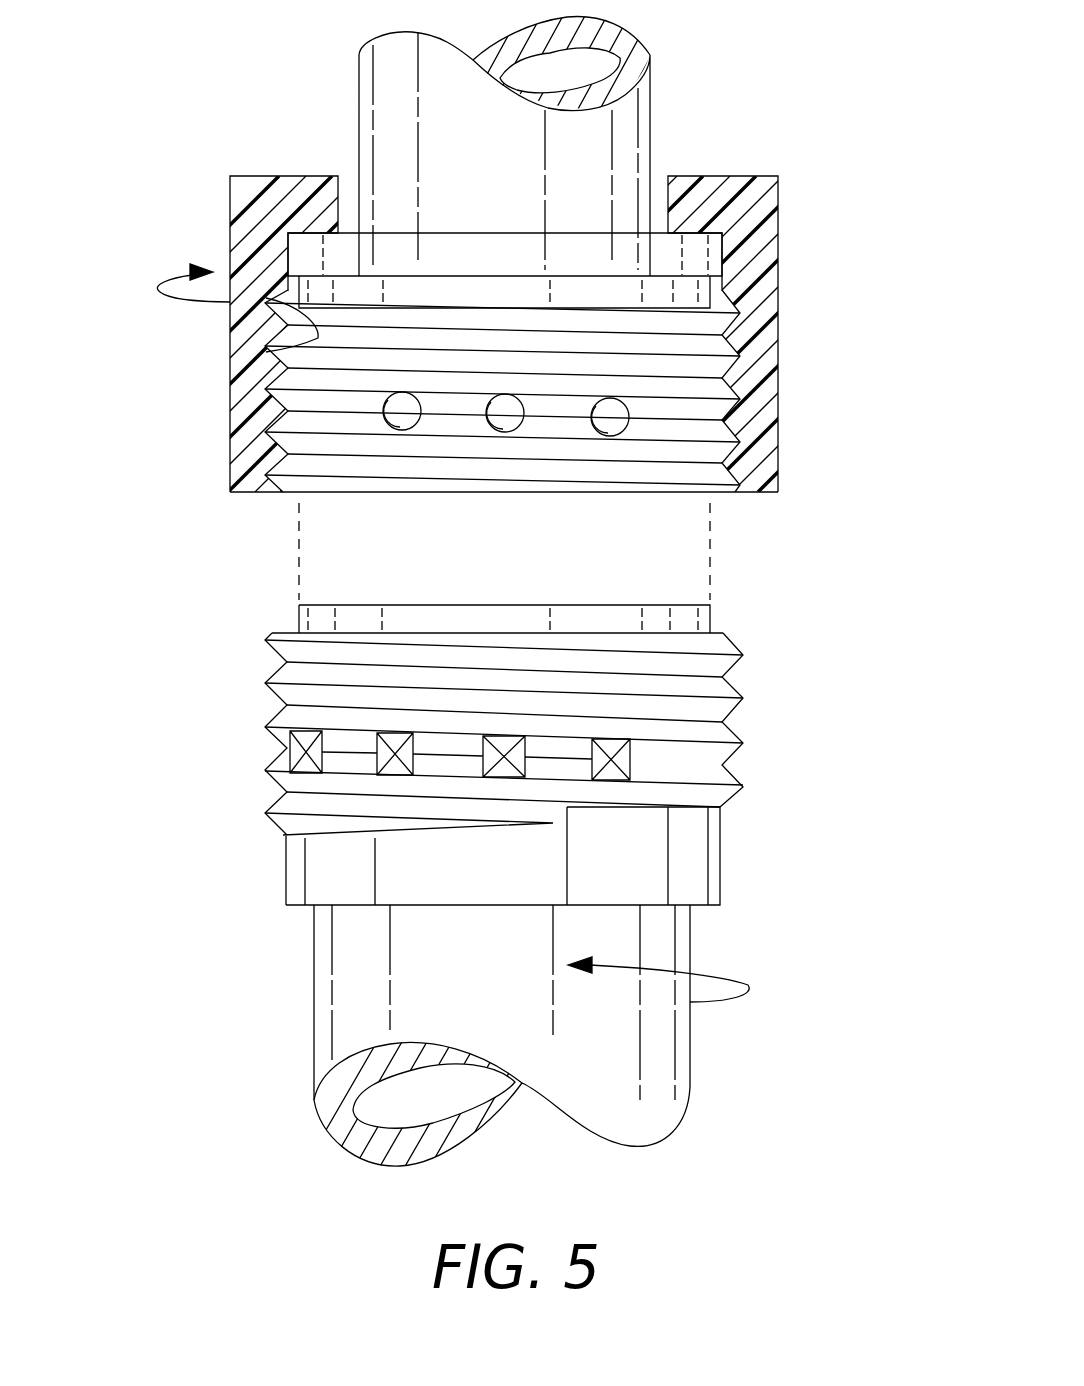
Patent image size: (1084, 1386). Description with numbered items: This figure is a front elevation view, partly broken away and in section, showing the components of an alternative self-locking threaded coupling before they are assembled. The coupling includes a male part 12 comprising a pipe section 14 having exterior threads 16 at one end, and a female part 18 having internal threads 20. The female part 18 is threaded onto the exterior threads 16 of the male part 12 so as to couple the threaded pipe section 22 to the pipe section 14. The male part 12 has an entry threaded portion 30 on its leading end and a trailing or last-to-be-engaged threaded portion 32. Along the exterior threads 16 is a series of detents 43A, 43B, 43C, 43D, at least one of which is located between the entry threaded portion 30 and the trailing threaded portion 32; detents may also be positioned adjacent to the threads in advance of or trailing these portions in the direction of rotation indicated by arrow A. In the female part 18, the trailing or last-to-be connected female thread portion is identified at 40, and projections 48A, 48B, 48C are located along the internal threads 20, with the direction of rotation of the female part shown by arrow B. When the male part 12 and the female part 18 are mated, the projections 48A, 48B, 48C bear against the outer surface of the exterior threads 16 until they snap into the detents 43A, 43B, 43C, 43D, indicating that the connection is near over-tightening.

The male part 12 is at (720, 877).
The pipe section 14 is at (314, 1010).
The exterior threads 16 is at (743, 655).
The female part 18 is at (778, 252).
The internal threads 20 is at (722, 492).
The threaded pipe section 22 is at (650, 122).
The entry threaded portion 30 is at (278, 668).
The trailing threaded portion 32 is at (285, 863).
The last-to-be connected female thread portion 40 is at (277, 352).
The detent 43A is at (297, 760).
The detent 43B is at (553, 823).
The detent 43C is at (503, 778).
The detent 43D is at (623, 765).
The projection 48A is at (610, 424).
The projection 48B is at (505, 420).
The projection 48C is at (402, 418).
The direction of rotation arrow A is at (733, 980).
The direction of rotation arrow B is at (172, 278).